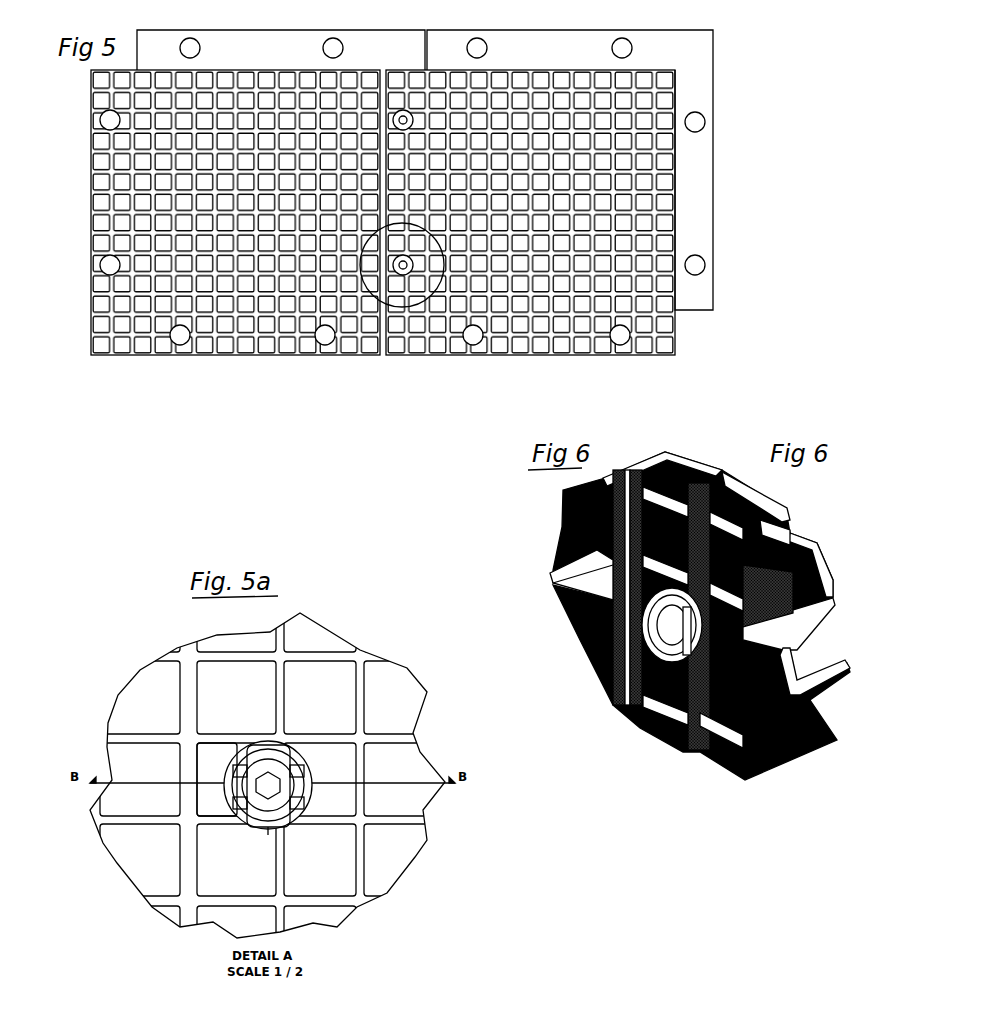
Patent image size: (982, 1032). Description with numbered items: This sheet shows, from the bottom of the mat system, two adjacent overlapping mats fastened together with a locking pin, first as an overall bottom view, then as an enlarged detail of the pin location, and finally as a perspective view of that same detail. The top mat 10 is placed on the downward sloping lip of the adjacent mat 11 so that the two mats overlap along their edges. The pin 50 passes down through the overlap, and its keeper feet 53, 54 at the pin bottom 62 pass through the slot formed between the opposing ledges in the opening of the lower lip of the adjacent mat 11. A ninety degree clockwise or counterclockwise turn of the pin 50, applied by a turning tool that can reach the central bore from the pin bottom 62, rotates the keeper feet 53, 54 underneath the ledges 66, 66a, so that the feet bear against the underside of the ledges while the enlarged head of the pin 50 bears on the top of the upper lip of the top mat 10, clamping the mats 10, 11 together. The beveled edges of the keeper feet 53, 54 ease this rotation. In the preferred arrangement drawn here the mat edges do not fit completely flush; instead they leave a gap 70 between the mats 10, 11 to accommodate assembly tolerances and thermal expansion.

In FIG. 5, the top mat 10 is at (405, 360).
In FIG. 6, the top mat 10 is at (832, 567).
In FIG. 5, the adjacent mat 11 is at (178, 360).
In FIG. 6, the adjacent mat 11 is at (678, 458).
In FIG. 5, the pin 50 is at (372, 297).
In FIG. 5A, the pin 50 is at (282, 752).
In FIG. 6, the pin 50 is at (560, 610).
In FIG. 5A, the keeper foot 53 is at (260, 753).
In FIG. 6, the keeper foot 53 is at (560, 575).
In FIG. 5A, the keeper foot 54 is at (270, 830).
In FIG. 6, the keeper foot 54 is at (653, 717).
In FIG. 5A, the pin bottom 62 is at (270, 795).
In FIG. 6, the pin bottom 62 is at (620, 707).
In FIG. 5A, the ledge 66 is at (300, 810).
In FIG. 6, the ledge 66 is at (693, 700).
In FIG. 5A, the ledge 66a is at (287, 758).
In FIG. 6, the gap 70 is at (782, 518).